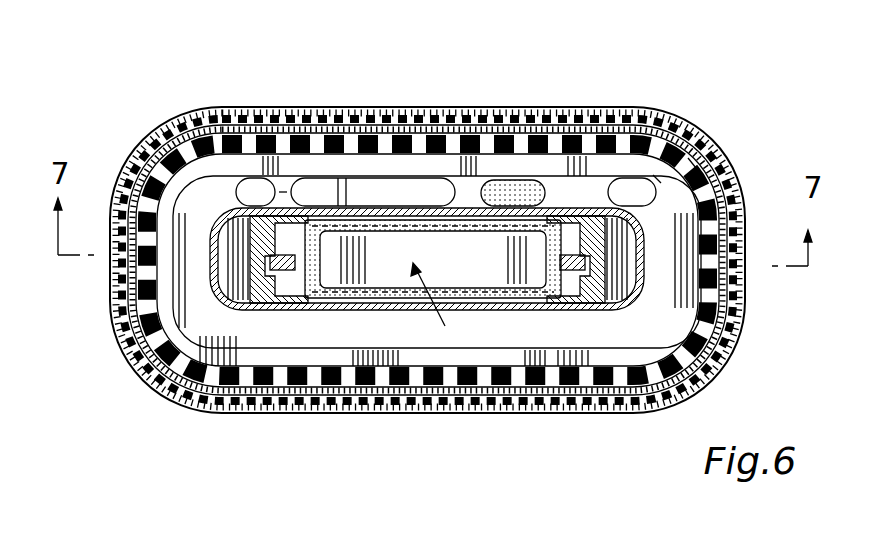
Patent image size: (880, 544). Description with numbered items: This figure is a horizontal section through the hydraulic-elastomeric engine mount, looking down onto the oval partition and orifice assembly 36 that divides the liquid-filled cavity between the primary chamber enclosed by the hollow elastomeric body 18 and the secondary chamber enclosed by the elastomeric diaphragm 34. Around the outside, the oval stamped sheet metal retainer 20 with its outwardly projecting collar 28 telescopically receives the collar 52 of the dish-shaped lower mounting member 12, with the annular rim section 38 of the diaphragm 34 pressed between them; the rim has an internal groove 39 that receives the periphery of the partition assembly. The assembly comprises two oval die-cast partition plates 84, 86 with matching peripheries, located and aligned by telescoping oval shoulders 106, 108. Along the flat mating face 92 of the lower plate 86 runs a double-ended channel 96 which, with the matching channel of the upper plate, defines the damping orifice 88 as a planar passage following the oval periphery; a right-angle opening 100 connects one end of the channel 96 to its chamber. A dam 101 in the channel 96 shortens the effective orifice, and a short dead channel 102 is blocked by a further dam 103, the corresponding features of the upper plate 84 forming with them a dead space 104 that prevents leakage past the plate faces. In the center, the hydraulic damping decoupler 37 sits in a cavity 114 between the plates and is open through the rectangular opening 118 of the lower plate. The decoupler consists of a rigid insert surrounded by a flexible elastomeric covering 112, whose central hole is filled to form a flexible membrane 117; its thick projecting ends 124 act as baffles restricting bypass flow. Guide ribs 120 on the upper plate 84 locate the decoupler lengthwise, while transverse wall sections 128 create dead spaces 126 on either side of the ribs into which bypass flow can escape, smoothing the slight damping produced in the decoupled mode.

The mounting member 12 is at (583, 392).
The elastomeric body 18 is at (530, 107).
The retainer 20 is at (400, 99).
The collar 28 is at (322, 112).
The elastomeric diaphragm 34 is at (170, 348).
The partition and orifice assembly 36 is at (315, 350).
The hydraulic damping decoupler 37 is at (433, 302).
The rim section 38 is at (222, 370).
The internal groove 39 is at (455, 366).
The collar 52 is at (522, 384).
The partition plate 84 is at (645, 167).
The partition plate 86 is at (607, 152).
The damping orifice 88 is at (196, 297).
The mating face 92 is at (680, 150).
The channel 96 is at (650, 196).
The opening 100 is at (527, 174).
The dam 101 is at (278, 172).
The dead channel 102 is at (460, 170).
The dam 103 is at (468, 200).
The dead space 104 is at (348, 178).
The shoulder 106 is at (204, 268).
The shoulder 108 is at (207, 210).
The elastomeric covering 112 is at (367, 288).
The cavity 114 is at (560, 298).
The flexible membrane 117 is at (470, 288).
The opening 118 is at (545, 286).
The guide ribs 120 is at (300, 205).
The projecting ends 124 is at (352, 188).
The dead spaces 126 is at (585, 210).
The transverse wall sections 128 is at (407, 205).